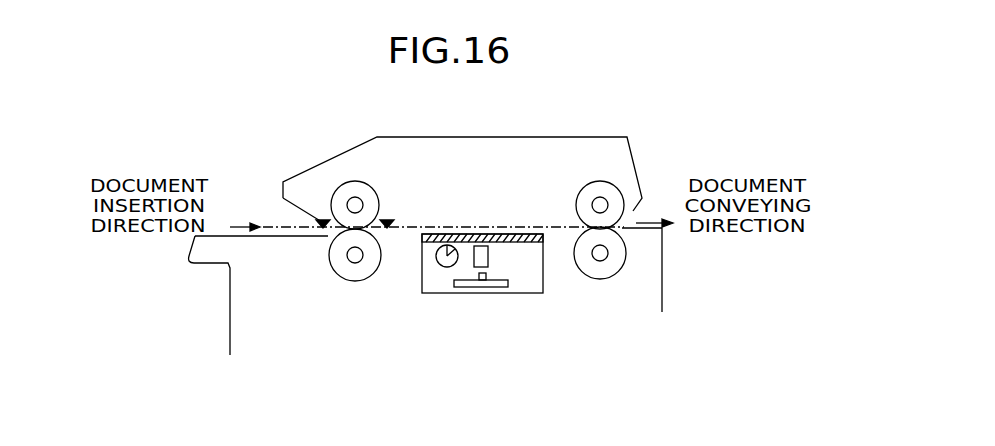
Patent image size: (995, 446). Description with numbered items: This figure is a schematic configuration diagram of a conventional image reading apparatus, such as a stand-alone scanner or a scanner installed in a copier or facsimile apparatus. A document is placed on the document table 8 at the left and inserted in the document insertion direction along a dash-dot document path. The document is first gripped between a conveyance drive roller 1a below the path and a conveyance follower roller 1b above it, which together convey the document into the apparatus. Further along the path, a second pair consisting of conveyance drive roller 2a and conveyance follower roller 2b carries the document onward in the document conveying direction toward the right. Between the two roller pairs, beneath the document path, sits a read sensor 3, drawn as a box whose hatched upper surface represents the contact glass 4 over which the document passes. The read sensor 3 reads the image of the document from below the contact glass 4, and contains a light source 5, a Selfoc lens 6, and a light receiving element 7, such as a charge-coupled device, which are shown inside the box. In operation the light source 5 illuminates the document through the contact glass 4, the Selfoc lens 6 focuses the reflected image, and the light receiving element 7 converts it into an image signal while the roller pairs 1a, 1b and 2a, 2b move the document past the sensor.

The conveyance drive roller 1a is at (358, 270).
The conveyance follower roller 1b is at (355, 190).
The conveyance drive roller 2a is at (605, 273).
The conveyance follower roller 2b is at (602, 192).
The read sensor 3 is at (533, 291).
The contact glass 4 is at (475, 234).
The light source 5 is at (442, 265).
The Selfoc lens 6 is at (488, 255).
The light receiving element 7 is at (481, 288).
The document table 8 is at (222, 236).